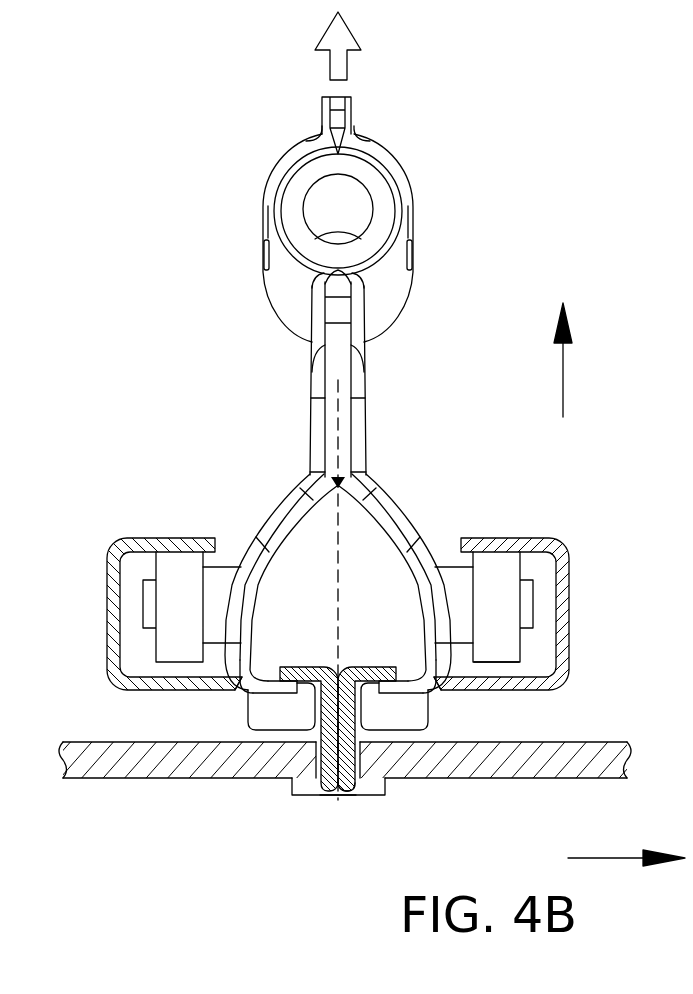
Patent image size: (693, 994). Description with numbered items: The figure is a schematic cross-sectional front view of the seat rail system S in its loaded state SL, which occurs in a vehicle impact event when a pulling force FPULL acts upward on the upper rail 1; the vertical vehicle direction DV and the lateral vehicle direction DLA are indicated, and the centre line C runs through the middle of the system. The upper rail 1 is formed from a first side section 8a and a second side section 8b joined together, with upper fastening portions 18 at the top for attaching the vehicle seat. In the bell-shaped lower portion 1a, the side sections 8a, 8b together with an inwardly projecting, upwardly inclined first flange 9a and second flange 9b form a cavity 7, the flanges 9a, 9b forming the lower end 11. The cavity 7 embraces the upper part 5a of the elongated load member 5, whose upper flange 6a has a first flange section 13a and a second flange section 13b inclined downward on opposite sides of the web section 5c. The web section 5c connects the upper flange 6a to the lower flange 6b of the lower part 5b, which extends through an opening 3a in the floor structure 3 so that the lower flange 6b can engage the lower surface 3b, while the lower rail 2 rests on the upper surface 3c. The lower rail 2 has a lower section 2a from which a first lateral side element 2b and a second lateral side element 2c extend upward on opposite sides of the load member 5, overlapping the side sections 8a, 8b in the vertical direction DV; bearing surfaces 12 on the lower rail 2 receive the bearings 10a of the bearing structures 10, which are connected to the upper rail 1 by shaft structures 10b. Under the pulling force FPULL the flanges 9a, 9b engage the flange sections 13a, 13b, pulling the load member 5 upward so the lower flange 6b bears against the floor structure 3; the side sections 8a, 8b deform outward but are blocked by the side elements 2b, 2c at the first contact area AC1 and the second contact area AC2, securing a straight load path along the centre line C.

The upper rail 1 is at (365, 438).
The lower portion 1a is at (302, 665).
The lower rail 2 is at (568, 627).
The lower section 2a is at (280, 745).
The first lateral side element 2b is at (253, 676).
The second lateral side element 2c is at (414, 677).
The floor structure 3 is at (344, 778).
The openings 3a is at (293, 762).
The lower surface 3b is at (80, 796).
The upper surface 3c is at (97, 719).
The load member 5 is at (340, 755).
The upper part 5a is at (535, 688).
The lower part 5b is at (406, 799).
The web section 5c is at (440, 745).
The upper flange 6a is at (493, 665).
The lower flange 6b is at (380, 826).
The cavity 7 is at (359, 585).
The first side section 8a is at (280, 506).
The second side section 8b is at (418, 560).
The first flange 9a is at (262, 700).
The second flange 9b is at (445, 700).
The bearing structures 10 is at (392, 588).
The bearings 10a is at (503, 625).
The shaft structures 10b is at (453, 612).
The lower end 11 is at (224, 698).
The bearing surfaces 12 is at (136, 674).
The first flange section 13a is at (288, 640).
The second flange section 13b is at (447, 555).
The upper fastening portions 18 is at (362, 212).
The seat rail system S is at (125, 252).
The loaded state SL is at (472, 240).
The centre line C is at (340, 420).
The vertical vehicle direction DV is at (581, 360).
The lateral vehicle direction DLA is at (626, 874).
The pulling force FPULL is at (371, 46).
The first contact area AC1 is at (236, 523).
The second contact area AC2 is at (398, 653).